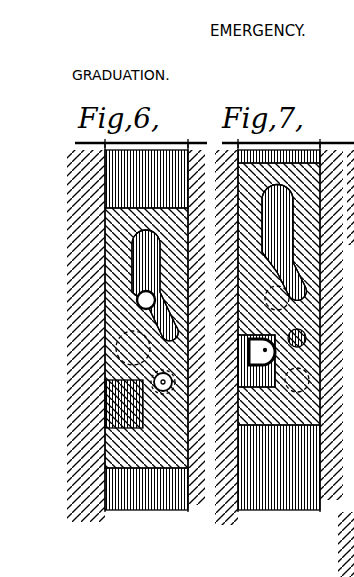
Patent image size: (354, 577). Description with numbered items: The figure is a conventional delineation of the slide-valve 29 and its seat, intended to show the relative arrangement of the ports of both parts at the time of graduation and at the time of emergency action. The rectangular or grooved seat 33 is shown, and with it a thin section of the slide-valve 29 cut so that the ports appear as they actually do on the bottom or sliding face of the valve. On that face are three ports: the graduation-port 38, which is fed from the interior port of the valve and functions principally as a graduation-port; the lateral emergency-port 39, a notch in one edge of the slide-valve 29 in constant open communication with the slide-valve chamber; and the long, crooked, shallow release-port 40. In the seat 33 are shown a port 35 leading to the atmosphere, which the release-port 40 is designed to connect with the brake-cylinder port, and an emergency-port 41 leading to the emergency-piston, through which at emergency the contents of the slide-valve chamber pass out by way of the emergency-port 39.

In FIG. 6, the slide-valve 29 is at (112, 333).
In FIG. 7, the slide-valve 29 is at (236, 323).
In FIG. 6, the bushing or sleeve 33 is at (147, 500).
In FIG. 7, the bushing or sleeve 33 is at (258, 503).
In FIG. 6, the port leading to the atmosphere 35 is at (138, 300).
In FIG. 6, the graduation-port 38 is at (152, 383).
In FIG. 6, the lateral emergency-port 39 is at (114, 413).
In FIG. 7, the lateral emergency-port 39 is at (236, 382).
In FIG. 6, the release-port 40 is at (137, 255).
In FIG. 7, the release-port 40 is at (290, 192).
In FIG. 7, the emergency-port 41 is at (238, 356).